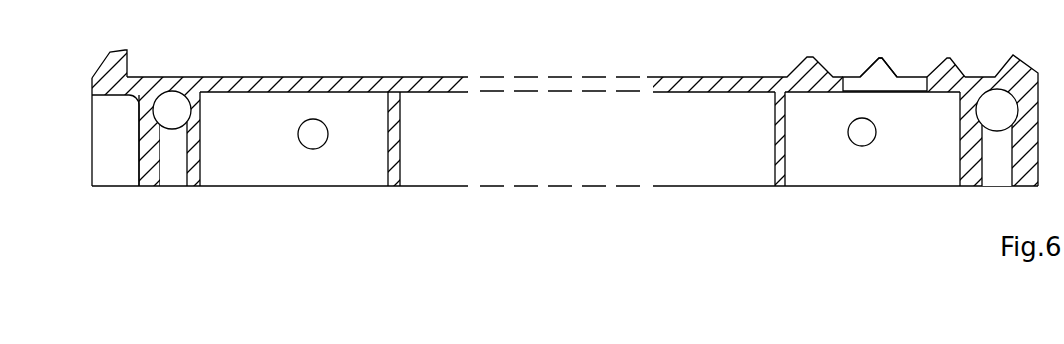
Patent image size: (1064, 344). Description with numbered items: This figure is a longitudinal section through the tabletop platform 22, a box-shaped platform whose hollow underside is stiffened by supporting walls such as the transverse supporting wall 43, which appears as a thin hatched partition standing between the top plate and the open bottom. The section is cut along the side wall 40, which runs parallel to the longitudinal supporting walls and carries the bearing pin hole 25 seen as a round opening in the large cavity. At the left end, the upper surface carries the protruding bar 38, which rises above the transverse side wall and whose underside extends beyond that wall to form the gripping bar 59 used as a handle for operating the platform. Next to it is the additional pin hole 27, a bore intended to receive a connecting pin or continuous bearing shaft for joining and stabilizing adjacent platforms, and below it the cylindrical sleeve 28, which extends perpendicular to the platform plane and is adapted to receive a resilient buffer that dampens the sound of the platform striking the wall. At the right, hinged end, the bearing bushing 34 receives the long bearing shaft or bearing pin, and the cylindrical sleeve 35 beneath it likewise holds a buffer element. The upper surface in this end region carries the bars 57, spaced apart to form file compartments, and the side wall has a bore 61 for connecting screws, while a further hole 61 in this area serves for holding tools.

The tabletop platform 22 is at (303, 86).
The bearing pin hole 25 is at (315, 138).
The additional pin hole 27 is at (176, 104).
The cylindrical sleeve 28 is at (152, 163).
The bearing bushing 34 is at (1003, 105).
The cylindrical sleeve 35 is at (967, 160).
The protruding bar 38 is at (110, 68).
The side wall 40 is at (252, 170).
The transverse supporting wall 43 is at (397, 157).
The bars 57 is at (945, 55).
The gripping bar 59 is at (124, 102).
The bore 61 is at (862, 85).